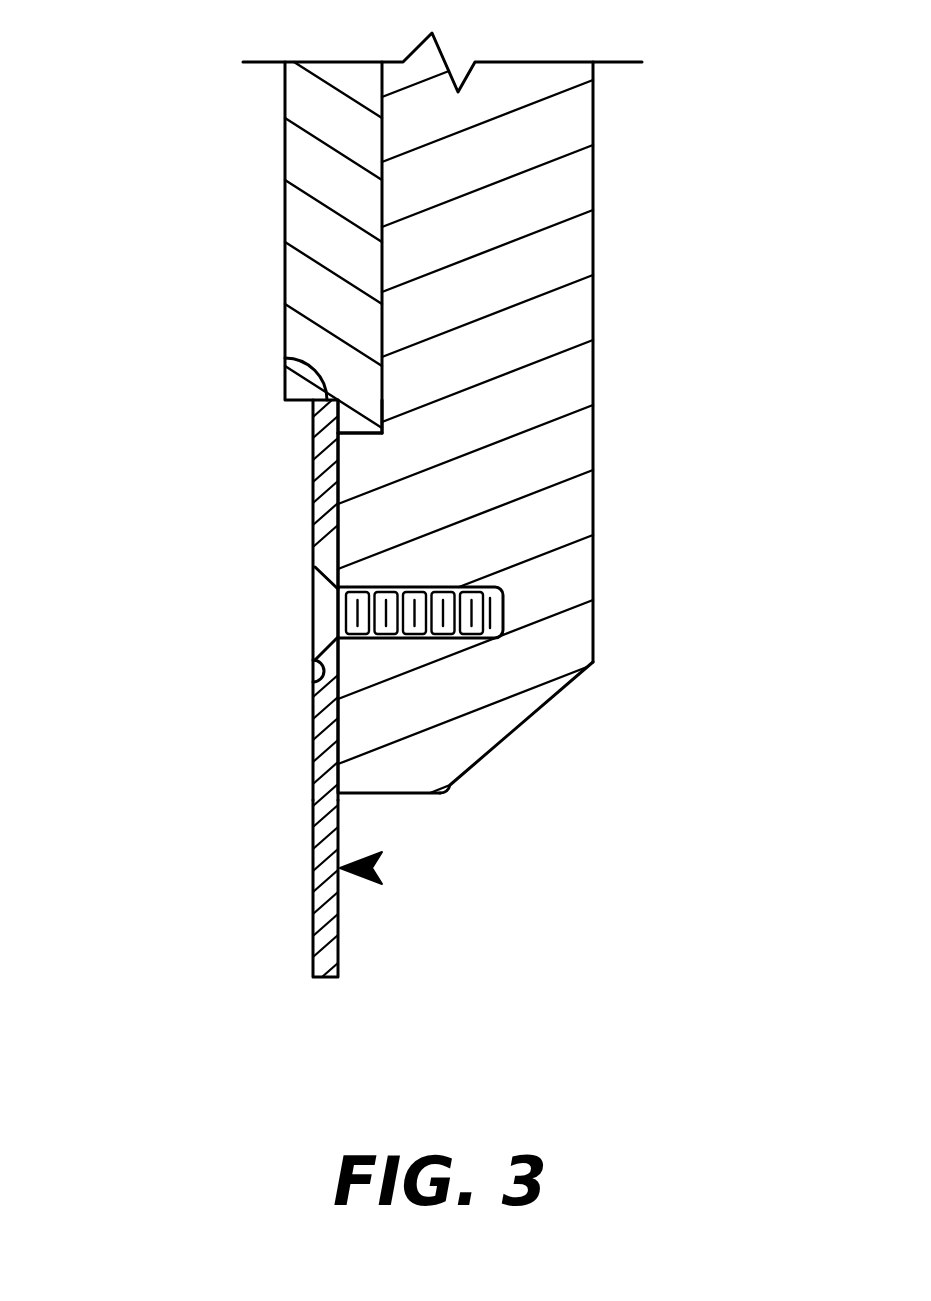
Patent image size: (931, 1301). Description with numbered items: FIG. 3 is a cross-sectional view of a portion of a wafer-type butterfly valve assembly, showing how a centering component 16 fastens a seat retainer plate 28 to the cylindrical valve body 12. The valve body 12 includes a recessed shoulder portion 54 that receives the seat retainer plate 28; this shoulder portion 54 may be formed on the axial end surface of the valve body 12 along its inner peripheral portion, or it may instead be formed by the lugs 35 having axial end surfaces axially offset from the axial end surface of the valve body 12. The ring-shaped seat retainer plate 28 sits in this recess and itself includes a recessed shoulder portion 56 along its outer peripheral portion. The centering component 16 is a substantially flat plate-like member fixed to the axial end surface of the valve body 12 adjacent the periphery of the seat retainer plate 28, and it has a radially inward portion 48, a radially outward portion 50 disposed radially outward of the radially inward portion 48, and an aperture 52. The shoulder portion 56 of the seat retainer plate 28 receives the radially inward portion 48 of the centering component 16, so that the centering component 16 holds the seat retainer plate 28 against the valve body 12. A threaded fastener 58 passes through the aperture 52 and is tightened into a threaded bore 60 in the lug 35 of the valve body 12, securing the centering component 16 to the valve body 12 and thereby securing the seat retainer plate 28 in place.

The valve body 12 is at (528, 247).
The centering component 16 is at (372, 868).
The seat retainer plate 28 is at (302, 153).
The lug 35 is at (518, 700).
The radially inward portion 48 is at (325, 485).
The radially outward portion 50 is at (312, 927).
The aperture 52 is at (313, 683).
The recessed shoulder portion 54 is at (360, 435).
The recessed shoulder portion 56 is at (315, 368).
The threaded fastener 58 is at (503, 597).
The threaded bore 60 is at (415, 586).